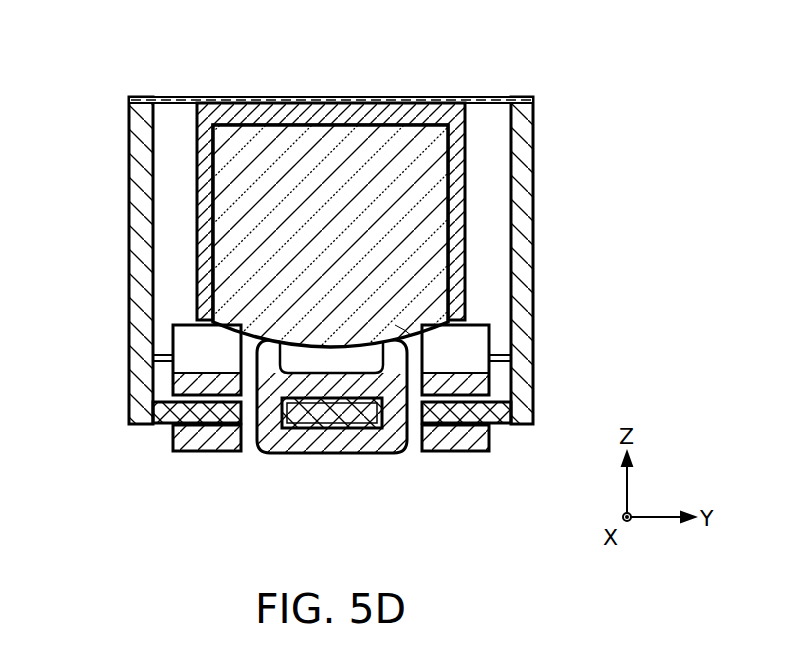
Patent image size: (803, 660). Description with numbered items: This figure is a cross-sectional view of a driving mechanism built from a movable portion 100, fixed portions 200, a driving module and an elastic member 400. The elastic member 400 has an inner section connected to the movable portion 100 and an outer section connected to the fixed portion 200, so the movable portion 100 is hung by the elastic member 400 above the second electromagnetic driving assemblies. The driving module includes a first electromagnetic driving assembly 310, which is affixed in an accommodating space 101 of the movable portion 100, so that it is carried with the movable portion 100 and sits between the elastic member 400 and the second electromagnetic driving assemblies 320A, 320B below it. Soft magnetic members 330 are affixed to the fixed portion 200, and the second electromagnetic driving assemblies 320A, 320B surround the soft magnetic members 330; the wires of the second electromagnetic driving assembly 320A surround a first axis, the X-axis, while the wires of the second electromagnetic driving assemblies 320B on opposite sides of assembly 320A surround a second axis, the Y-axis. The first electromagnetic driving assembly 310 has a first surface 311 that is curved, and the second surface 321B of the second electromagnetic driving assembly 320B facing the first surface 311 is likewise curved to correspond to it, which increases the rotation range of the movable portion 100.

The movable portion 100 is at (264, 98).
The accommodating space 101 is at (427, 208).
The fixed portion 200 is at (527, 230).
The first electromagnetic driving assembly 310 is at (331, 170).
The first surface 311 is at (410, 336).
The elastic member 400 is at (470, 101).
The second electromagnetic driving assembly 320A is at (364, 450).
The second electromagnetic driving assembly 320B is at (206, 440).
The second surface 321B is at (185, 342).
The soft magnetic member 330 is at (314, 440).